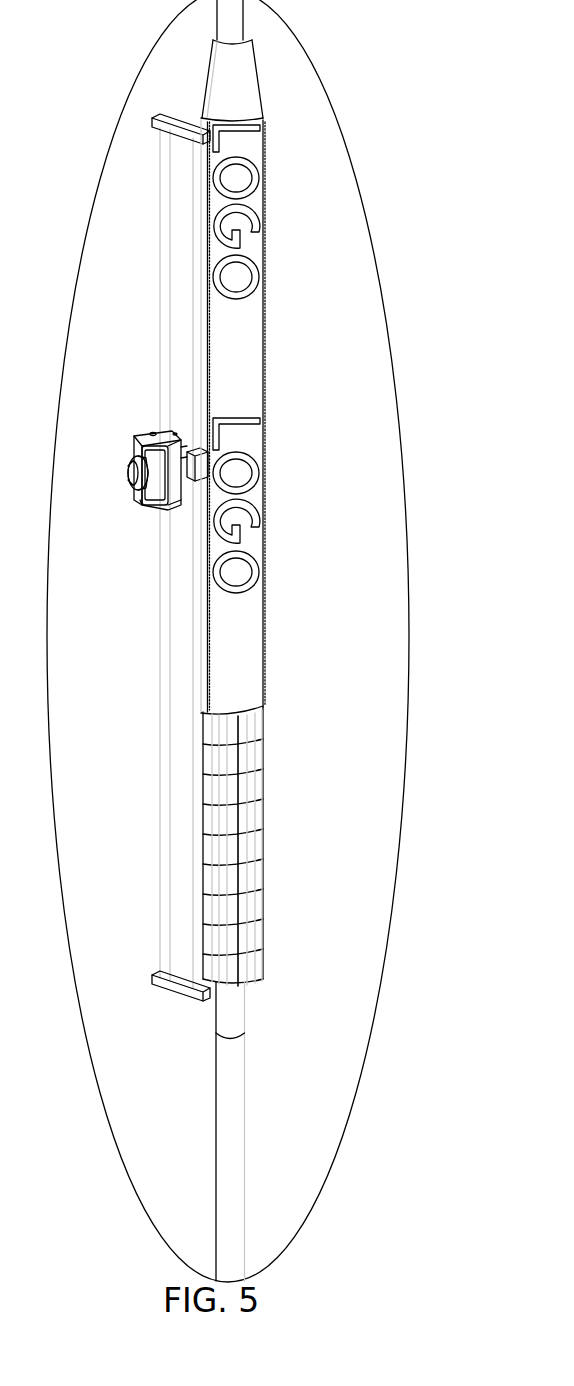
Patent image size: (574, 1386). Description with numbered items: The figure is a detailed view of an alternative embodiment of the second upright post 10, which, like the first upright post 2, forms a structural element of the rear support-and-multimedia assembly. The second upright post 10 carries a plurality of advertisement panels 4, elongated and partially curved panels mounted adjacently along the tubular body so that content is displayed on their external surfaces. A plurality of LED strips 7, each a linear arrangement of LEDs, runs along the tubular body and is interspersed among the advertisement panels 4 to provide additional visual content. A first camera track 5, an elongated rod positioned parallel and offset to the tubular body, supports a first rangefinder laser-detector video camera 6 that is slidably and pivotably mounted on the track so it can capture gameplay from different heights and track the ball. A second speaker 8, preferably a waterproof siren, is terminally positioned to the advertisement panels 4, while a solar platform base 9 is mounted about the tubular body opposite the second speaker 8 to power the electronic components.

The first upright post 2 is at (233, 1028).
The plurality of advertisement panels 4 is at (255, 311).
The first camera track 5 is at (163, 377).
The first rangefinder laser-detector video camera 6 is at (132, 475).
The plurality of light-emitting diode (LED) strips 7 is at (198, 641).
The second speaker 8 is at (248, 100).
The solar platform base 9 is at (261, 829).
The second upright post 10 is at (368, 562).